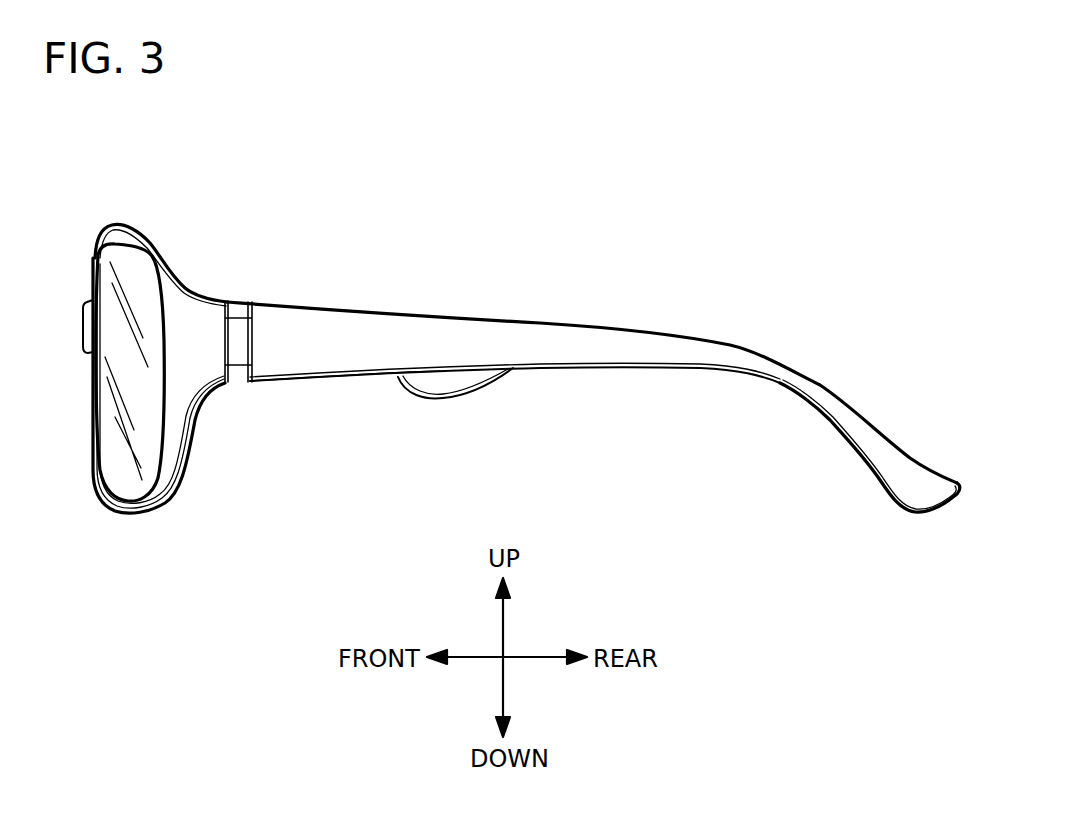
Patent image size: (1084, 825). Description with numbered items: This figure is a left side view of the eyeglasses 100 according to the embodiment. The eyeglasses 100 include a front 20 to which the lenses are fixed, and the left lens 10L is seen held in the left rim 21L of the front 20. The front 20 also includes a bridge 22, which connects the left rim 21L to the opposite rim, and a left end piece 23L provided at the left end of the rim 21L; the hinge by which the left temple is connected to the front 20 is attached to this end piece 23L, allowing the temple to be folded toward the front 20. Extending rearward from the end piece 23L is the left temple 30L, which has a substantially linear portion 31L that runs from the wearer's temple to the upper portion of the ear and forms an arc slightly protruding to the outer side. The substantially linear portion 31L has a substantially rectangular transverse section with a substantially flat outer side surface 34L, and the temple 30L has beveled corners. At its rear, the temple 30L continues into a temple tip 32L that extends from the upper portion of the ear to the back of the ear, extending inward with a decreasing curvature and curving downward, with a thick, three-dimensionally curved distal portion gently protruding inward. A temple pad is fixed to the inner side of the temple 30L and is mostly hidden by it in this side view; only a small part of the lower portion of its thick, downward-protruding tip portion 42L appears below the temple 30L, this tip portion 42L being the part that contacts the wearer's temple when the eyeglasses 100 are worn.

The eyeglasses 100 is at (702, 208).
The front 20 is at (167, 230).
The left rim 21L is at (127, 240).
The bridge 22 is at (78, 300).
The left end piece 23L is at (200, 325).
The left lens 10L is at (127, 477).
The left temple 30L is at (543, 378).
The substantially linear portion 31L is at (370, 358).
The temple tip 32L is at (872, 455).
The outer side surface 34L is at (318, 353).
The tip portion 42L is at (450, 380).